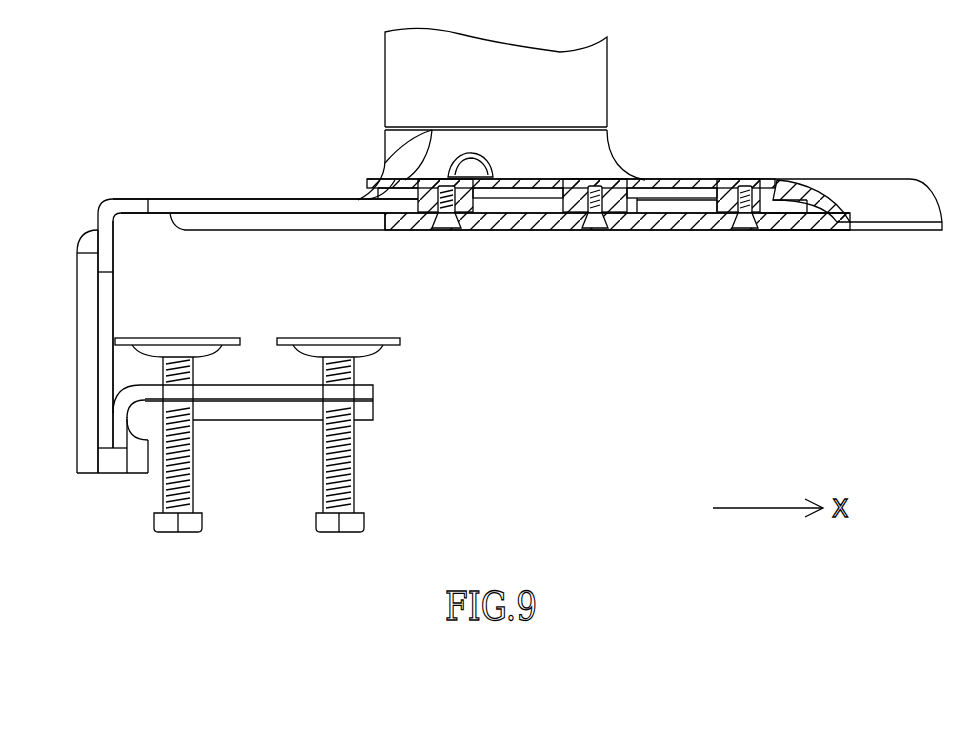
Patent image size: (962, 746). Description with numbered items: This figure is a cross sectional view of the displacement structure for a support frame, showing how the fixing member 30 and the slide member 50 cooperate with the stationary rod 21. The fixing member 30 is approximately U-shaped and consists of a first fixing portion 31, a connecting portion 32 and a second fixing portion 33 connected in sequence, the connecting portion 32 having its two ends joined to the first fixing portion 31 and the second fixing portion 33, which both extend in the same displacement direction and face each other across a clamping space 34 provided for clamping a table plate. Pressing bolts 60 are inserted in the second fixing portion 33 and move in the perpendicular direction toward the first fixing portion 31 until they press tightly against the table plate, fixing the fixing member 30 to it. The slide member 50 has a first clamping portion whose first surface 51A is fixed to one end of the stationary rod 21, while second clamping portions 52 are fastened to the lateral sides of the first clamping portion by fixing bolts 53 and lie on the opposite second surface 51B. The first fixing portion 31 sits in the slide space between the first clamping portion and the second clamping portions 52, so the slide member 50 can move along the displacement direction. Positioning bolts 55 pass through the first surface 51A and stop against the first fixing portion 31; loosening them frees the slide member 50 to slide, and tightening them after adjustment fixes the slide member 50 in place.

The stationary rod 21 is at (392, 87).
The fixing member 30 is at (101, 206).
The first fixing portion 31 is at (272, 203).
The connecting portion 32 is at (103, 352).
The second fixing portion 33 is at (362, 392).
The clamping space 34 is at (395, 310).
The slide member 50 is at (845, 179).
The first surface 51A is at (694, 178).
The second surface 51B is at (790, 232).
The second clamping portion 52 is at (653, 232).
The fixing bolt 53 is at (738, 232).
The positioning bolt 55 is at (470, 165).
The pressing bolt 60 is at (163, 497).